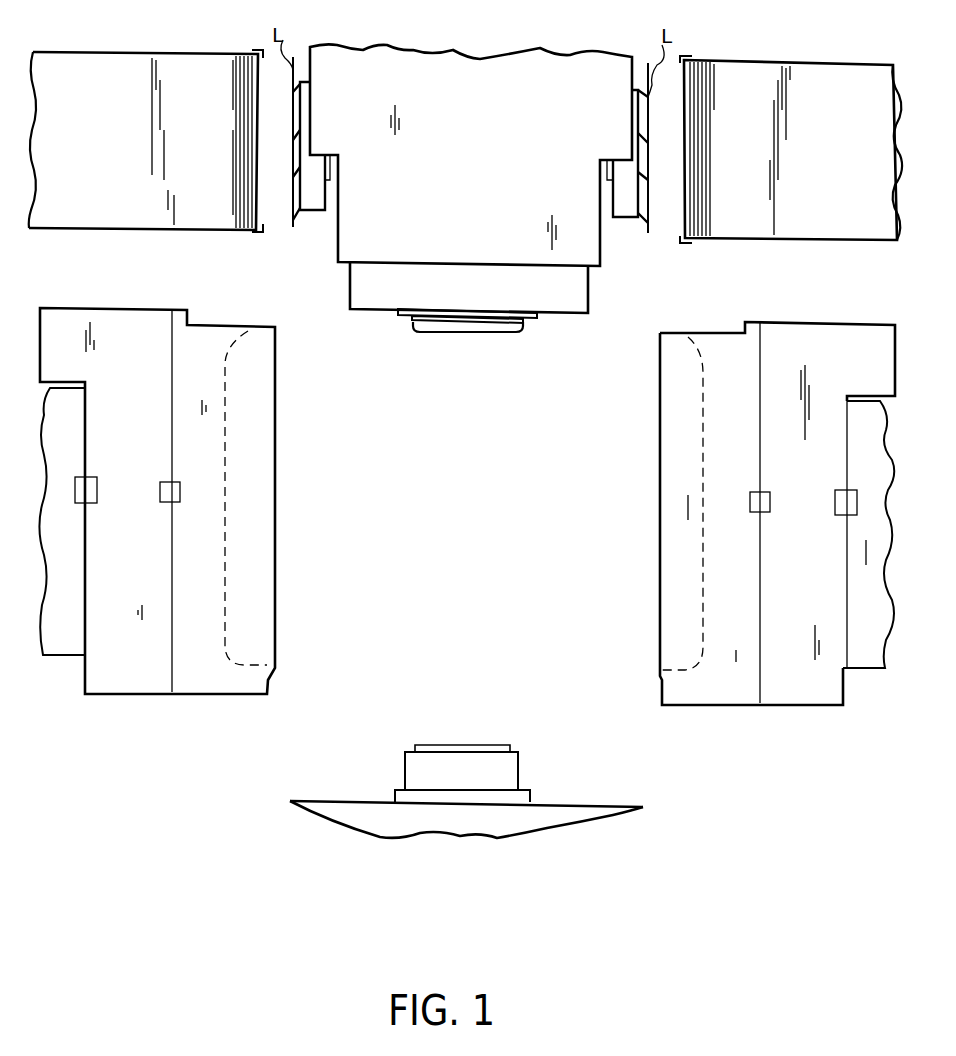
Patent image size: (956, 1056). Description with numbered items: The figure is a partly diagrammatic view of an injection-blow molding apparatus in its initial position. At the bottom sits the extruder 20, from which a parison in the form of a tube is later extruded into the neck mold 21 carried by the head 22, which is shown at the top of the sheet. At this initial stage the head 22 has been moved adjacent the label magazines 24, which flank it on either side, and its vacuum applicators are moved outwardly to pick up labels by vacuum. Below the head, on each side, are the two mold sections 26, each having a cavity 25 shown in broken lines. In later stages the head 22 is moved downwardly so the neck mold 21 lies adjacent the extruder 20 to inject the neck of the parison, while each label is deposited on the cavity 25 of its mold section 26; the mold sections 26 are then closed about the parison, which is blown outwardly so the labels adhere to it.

The extruder 20 is at (557, 808).
The neck mold 21 is at (588, 297).
The head 22 is at (447, 73).
The label magazine 24 is at (187, 68).
The cavity 25 is at (257, 510).
The mold section 26 is at (137, 684).